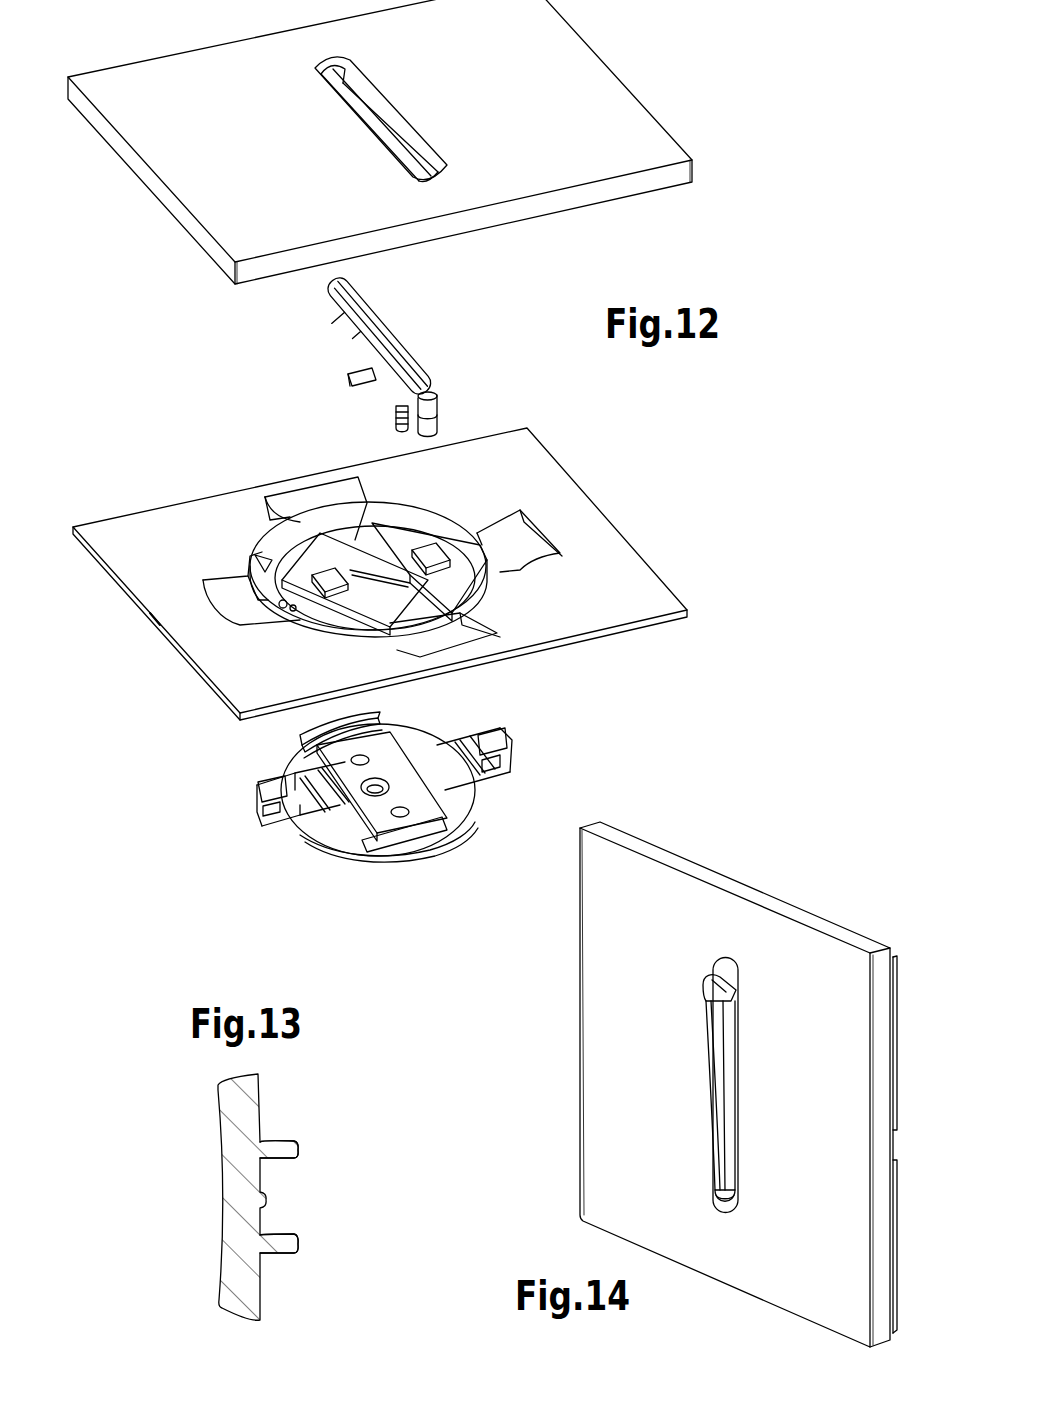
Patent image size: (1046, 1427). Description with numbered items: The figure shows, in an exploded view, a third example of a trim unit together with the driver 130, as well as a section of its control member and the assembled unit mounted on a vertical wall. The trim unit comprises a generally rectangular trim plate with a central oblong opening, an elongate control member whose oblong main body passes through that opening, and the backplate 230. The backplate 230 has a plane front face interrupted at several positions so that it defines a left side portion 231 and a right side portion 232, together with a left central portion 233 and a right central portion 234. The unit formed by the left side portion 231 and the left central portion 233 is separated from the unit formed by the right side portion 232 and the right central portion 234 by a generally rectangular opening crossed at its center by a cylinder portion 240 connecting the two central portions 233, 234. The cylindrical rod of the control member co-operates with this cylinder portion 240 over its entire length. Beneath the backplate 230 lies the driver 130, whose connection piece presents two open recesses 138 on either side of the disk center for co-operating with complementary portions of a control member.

In FIG. 12, the backplate 230 is at (590, 470).
In FIG. 14, the backplate 230 is at (896, 983).
In FIG. 12, the left side portion 231 is at (140, 540).
In FIG. 12, the right side portion 232 is at (495, 462).
In FIG. 12, the left central portion 233 is at (350, 607).
In FIG. 12, the right central portion 234 is at (470, 595).
In FIG. 12, the cylinder portion 240 is at (292, 520).
In FIG. 12, the driver 130 is at (478, 814).
In FIG. 12, the recesses 138 is at (396, 814).